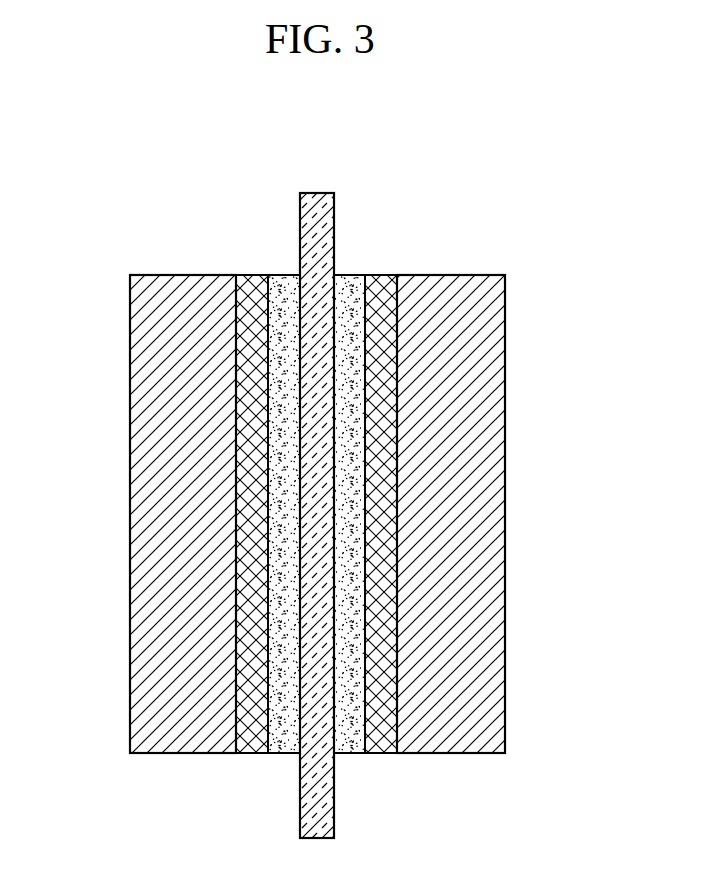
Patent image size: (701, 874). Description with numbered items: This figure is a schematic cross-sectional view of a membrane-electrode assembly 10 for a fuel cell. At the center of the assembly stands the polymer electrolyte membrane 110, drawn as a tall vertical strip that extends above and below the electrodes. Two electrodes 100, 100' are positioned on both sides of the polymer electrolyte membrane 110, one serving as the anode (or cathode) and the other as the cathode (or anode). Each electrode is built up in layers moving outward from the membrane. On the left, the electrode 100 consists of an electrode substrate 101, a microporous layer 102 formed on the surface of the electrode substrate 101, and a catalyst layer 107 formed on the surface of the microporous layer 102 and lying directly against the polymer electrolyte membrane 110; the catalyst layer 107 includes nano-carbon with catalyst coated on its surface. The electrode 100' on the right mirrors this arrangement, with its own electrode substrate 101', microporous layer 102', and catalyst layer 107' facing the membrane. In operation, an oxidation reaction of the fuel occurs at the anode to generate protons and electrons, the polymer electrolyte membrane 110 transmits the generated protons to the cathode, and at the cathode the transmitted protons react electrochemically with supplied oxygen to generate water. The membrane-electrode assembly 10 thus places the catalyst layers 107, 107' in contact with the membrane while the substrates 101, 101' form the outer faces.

The membrane-electrode assembly 10 is at (425, 191).
The electrode 100 is at (215, 477).
The electrode 100' is at (419, 477).
The electrode substrate 101 is at (136, 514).
The electrode substrate 101' is at (493, 514).
The microporous layer 102 is at (237, 549).
The microporous layer 102' is at (409, 549).
The catalyst layer 107 is at (278, 549).
The catalyst layer 107' is at (364, 552).
The polymer electrolyte membrane 110 is at (313, 200).